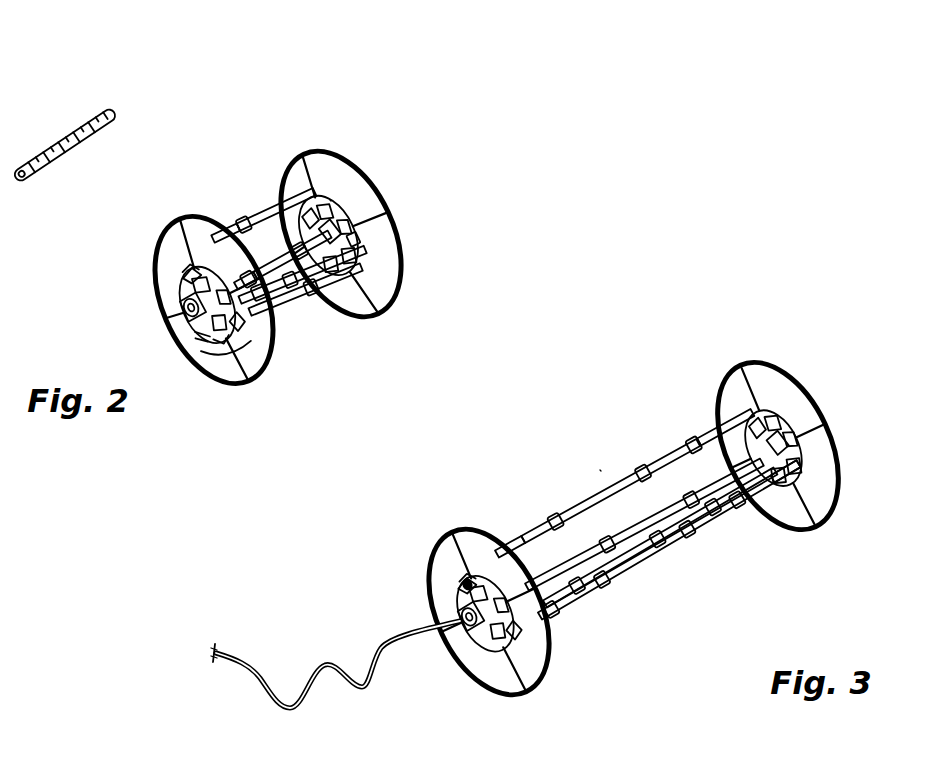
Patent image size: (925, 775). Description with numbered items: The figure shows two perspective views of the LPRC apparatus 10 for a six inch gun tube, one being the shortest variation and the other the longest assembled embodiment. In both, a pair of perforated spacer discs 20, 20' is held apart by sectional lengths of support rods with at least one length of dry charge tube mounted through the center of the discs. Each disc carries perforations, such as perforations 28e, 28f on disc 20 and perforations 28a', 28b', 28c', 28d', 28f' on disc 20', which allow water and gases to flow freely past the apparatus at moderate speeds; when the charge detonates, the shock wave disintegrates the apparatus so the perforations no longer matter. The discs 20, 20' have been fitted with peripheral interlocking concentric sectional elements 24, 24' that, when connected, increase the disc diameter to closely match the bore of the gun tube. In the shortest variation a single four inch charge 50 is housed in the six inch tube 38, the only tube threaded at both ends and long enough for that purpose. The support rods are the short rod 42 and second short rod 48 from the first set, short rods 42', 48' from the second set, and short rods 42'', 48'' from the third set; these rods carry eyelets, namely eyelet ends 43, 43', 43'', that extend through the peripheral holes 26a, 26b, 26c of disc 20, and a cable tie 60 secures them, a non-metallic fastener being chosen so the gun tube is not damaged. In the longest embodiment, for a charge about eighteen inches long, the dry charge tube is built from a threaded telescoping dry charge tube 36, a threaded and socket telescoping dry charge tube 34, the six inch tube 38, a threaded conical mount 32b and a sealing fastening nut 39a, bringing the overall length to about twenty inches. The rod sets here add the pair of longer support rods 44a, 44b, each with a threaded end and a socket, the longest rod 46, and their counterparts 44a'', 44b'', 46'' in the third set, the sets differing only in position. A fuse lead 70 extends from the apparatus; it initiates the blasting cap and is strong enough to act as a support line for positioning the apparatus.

In FIG. 2, the LPRC apparatus 10 is at (168, 111).
In FIG. 3, the LPRC apparatus 10 is at (560, 424).
In FIG. 2, the perforated spacer disc 20 is at (217, 346).
In FIG. 3, the perforated spacer disc 20 is at (489, 630).
In FIG. 2, the perforated spacer disc 20' is at (340, 215).
In FIG. 3, the perforated spacer disc 20' is at (777, 426).
In FIG. 2, the peripheral interlocking concentric sectional elements 24 is at (214, 276).
In FIG. 2, the peripheral interlocking concentric sectional elements 24' is at (341, 190).
In FIG. 2, the peripheral hole 26a is at (187, 266).
In FIG. 2, the peripheral hole 26b is at (248, 317).
In FIG. 2, the peripheral hole 26c is at (183, 318).
In FIG. 3, the perforation 28e is at (463, 617).
In FIG. 2, the perforation 28f is at (172, 288).
In FIG. 2, the perforation 28a' is at (350, 174).
In FIG. 2, the perforation 28b' is at (378, 192).
In FIG. 2, the perforation 28c' is at (398, 266).
In FIG. 2, the perforation 28d' is at (372, 303).
In FIG. 2, the perforation 28f' is at (291, 165).
In FIG. 2, the threaded conical mount 32b is at (350, 205).
In FIG. 3, the threaded conical mount 32b is at (768, 453).
In FIG. 3, the threaded and socket telescoping dry charge tube 34 is at (705, 483).
In FIG. 3, the threaded telescoping dry charge tube 36 is at (620, 537).
In FIG. 2, the threaded and socket dry charge six inch tube 38 is at (293, 258).
In FIG. 3, the threaded and socket dry charge six inch tube 38 is at (537, 580).
In FIG. 2, the sealing fastening nut 39a is at (183, 312).
In FIG. 3, the short rod 42 is at (669, 557).
In FIG. 2, the short rod 42' is at (247, 265).
In FIG. 2, the short rod 42'' is at (231, 210).
In FIG. 3, the short rod 42'' is at (506, 530).
In FIG. 2, the eyelet end 43 is at (244, 372).
In FIG. 2, the eyelet end 43' is at (196, 360).
In FIG. 2, the eyelet end 43'' is at (155, 254).
In FIG. 3, the longer support rod 44a is at (607, 609).
In FIG. 3, the longer support rod 44b is at (749, 529).
In FIG. 3, the longer support rod 44a'' is at (543, 506).
In FIG. 3, the longer support rod 44b'' is at (670, 426).
In FIG. 3, the longest rod 46 is at (660, 537).
In FIG. 3, the longest rod 46'' is at (611, 490).
In FIG. 2, the second short rod 48 is at (302, 287).
In FIG. 3, the second short rod 48 is at (786, 506).
In FIG. 2, the second short rod 48' is at (384, 216).
In FIG. 2, the second short rod 48'' is at (277, 193).
In FIG. 3, the second short rod 48'' is at (719, 408).
In FIG. 2, the four inch charge 50 is at (52, 183).
In FIG. 2, the cable tie 60 is at (183, 307).
In FIG. 3, the cable tie 60 is at (479, 572).
In FIG. 3, the fuse lead 70 is at (247, 692).